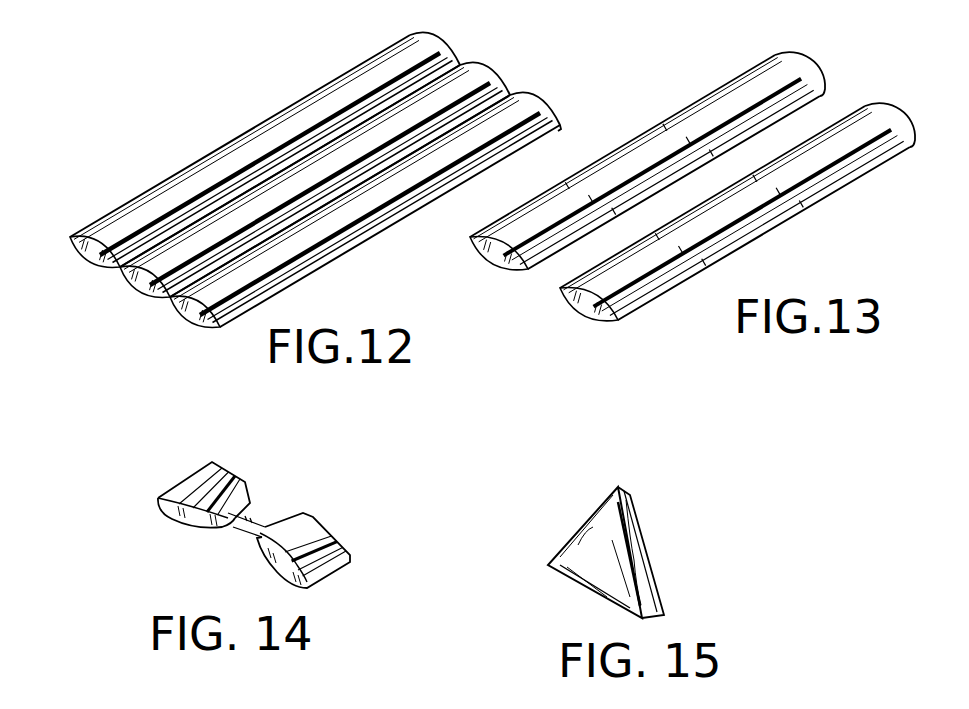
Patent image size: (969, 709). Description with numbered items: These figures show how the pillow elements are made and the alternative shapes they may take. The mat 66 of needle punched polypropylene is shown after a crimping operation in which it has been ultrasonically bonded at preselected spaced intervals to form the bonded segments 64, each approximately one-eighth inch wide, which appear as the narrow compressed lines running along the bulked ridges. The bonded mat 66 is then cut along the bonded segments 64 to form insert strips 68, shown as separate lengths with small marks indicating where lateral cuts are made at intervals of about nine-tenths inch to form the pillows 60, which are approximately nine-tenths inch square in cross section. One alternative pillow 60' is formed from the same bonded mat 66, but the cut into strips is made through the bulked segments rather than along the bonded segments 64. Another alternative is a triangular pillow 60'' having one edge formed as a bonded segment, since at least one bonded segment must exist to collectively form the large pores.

In FIG. 13, the pillow 60 is at (690, 215).
In FIG. 14, the pillow 60' is at (324, 525).
In FIG. 15, the triangular pillow 60'' is at (669, 552).
In FIG. 12, the bonded segment 64 is at (70, 238).
In FIG. 13, the bonded segment 64 is at (527, 268).
In FIG. 12, the mat 66 is at (515, 115).
In FIG. 13, the insert strip 68 is at (810, 63).